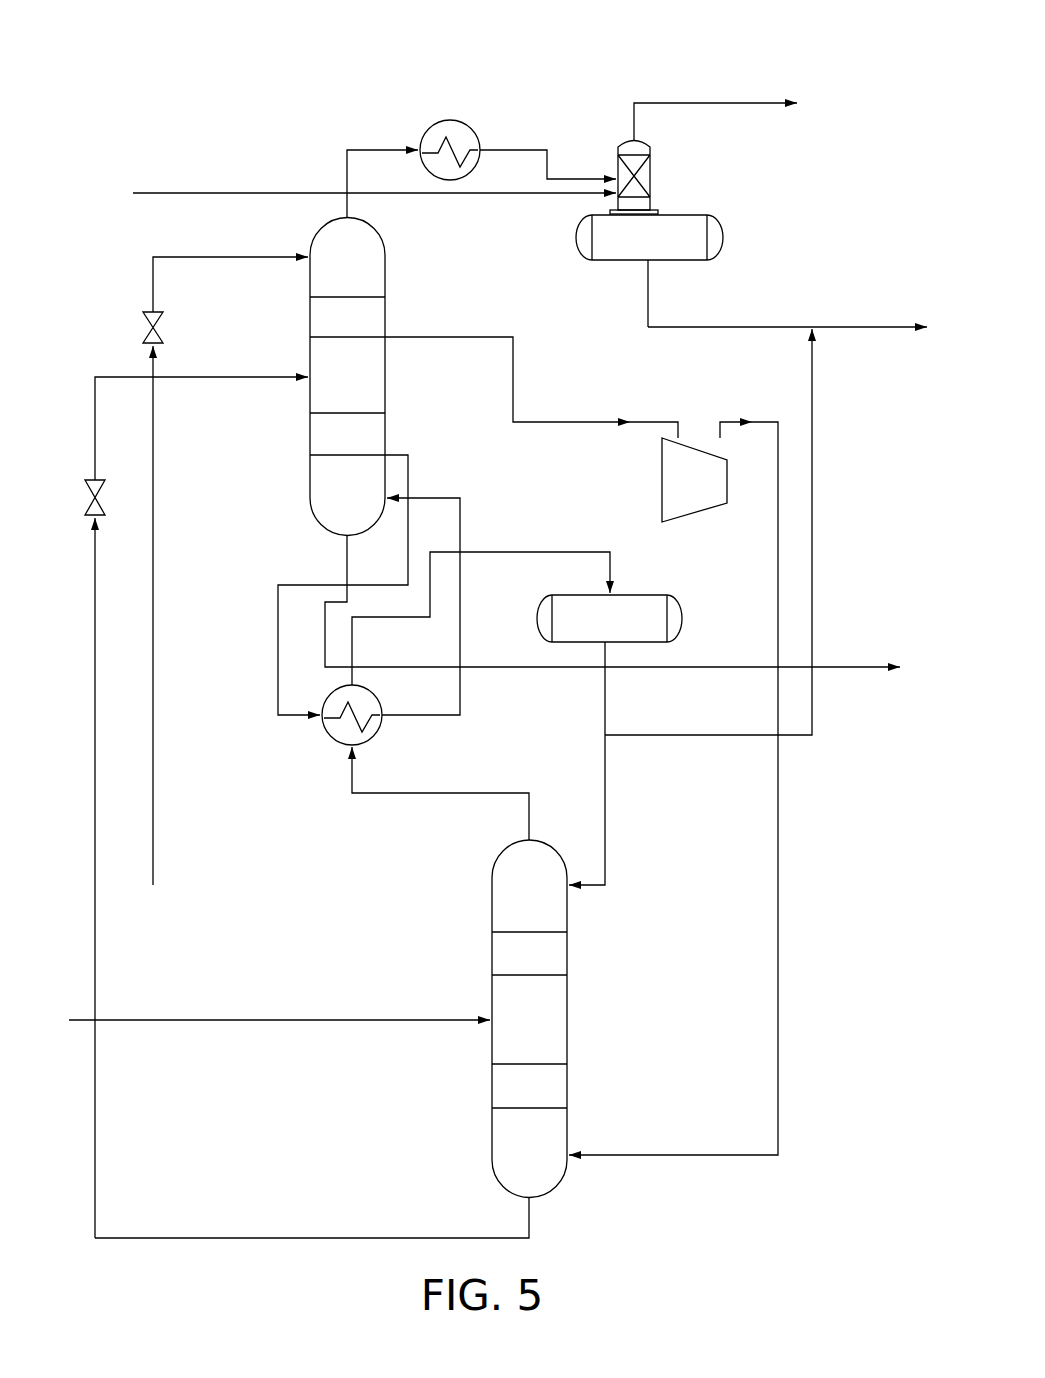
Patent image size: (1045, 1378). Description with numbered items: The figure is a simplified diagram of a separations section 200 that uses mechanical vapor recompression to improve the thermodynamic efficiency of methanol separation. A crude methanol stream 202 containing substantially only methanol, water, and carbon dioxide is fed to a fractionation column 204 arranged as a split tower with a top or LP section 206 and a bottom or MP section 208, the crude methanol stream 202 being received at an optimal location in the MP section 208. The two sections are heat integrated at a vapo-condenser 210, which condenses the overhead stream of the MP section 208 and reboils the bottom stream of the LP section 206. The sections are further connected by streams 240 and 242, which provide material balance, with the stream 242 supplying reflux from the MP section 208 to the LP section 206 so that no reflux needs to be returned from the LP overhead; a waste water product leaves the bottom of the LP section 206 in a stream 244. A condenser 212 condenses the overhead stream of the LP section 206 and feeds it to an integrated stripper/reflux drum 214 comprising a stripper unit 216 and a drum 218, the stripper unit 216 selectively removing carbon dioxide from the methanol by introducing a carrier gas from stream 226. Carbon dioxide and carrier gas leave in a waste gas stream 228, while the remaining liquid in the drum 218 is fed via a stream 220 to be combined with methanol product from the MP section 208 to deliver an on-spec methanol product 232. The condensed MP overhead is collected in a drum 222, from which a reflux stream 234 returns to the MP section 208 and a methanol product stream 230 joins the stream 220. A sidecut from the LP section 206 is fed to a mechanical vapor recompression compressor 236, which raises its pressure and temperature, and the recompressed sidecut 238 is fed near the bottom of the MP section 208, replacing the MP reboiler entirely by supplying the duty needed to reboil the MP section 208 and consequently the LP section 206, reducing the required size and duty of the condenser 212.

The separations section 200 is at (163, 1255).
The crude methanol stream 202 is at (263, 1020).
The fractionation column 204 is at (128, 708).
The LP section 206 is at (310, 353).
The MP section 208 is at (490, 960).
The vapo-condenser 210 is at (323, 732).
The condenser 212 is at (428, 135).
The integrated stripper/reflux drum 214 is at (745, 200).
The stripper unit 216 is at (613, 170).
The drum 218 is at (723, 237).
The stream 220 is at (650, 297).
The drum 222 is at (643, 593).
The stream 226 is at (168, 195).
The waste gas stream 228 is at (748, 102).
The methanol product stream 230 is at (813, 497).
The on-spec methanol product 232 is at (848, 330).
The reflux stream 234 is at (605, 800).
The mechanical vapor recompression compressor 236 is at (700, 450).
The recompressed sidecut 238 is at (780, 825).
The stream 240 is at (220, 1238).
The stream 242 is at (153, 480).
The stream 244 is at (848, 660).